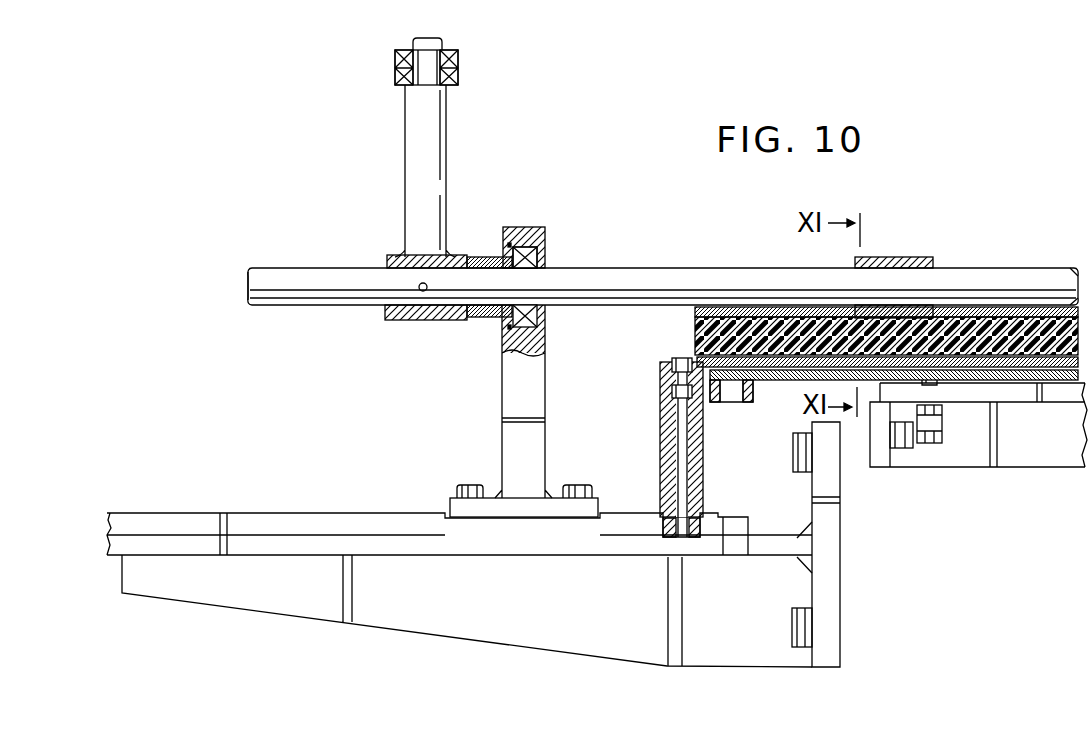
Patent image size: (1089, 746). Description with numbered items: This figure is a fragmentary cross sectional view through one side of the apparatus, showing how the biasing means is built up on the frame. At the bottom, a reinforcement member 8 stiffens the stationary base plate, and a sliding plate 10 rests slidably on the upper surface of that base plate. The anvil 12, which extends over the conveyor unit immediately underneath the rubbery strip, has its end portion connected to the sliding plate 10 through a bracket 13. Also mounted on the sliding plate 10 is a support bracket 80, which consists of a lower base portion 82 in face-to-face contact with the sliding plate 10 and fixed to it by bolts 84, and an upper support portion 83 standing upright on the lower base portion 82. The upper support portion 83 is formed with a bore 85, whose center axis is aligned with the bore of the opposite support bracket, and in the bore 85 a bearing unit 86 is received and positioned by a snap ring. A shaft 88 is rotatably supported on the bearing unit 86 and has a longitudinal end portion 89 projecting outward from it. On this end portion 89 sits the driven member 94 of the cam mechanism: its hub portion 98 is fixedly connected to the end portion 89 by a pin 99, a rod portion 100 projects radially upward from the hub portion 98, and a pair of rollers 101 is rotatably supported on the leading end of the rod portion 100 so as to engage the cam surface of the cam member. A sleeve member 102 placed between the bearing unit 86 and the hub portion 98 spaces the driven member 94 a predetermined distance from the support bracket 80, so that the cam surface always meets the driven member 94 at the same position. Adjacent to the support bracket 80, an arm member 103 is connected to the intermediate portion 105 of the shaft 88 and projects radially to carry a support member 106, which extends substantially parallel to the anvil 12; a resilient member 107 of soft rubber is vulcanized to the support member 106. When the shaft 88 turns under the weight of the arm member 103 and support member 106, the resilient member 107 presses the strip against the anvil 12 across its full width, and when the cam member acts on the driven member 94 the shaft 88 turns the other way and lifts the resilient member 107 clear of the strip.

The reinforcement member 8 is at (493, 633).
The sliding plate 10 is at (338, 513).
The anvil 12 is at (779, 380).
The bracket 13 is at (660, 405).
The support bracket 80 is at (550, 226).
The lower base portion 82 is at (450, 506).
The upper support portion 83 is at (508, 395).
The bolts 84 is at (470, 485).
The bore 85 is at (540, 254).
The bearing unit 86 is at (540, 318).
The shaft 88 is at (728, 268).
The longitudinal end portion 89 is at (305, 268).
The driven member 94 is at (468, 57).
The hub portion 98 is at (393, 254).
The pin 99 is at (428, 287).
The rod portion 100 is at (441, 168).
The rollers 101 is at (395, 75).
The sleeve member 102 is at (487, 258).
The arm member 103 is at (920, 257).
The intermediate portion 105 is at (1032, 268).
The support member 106 is at (695, 310).
The resilient member 107 is at (697, 338).